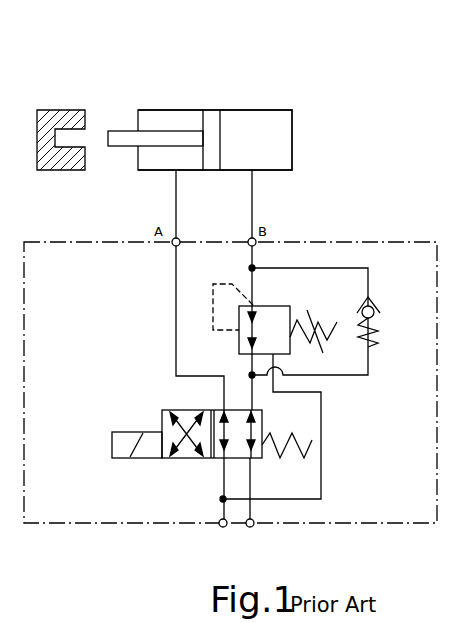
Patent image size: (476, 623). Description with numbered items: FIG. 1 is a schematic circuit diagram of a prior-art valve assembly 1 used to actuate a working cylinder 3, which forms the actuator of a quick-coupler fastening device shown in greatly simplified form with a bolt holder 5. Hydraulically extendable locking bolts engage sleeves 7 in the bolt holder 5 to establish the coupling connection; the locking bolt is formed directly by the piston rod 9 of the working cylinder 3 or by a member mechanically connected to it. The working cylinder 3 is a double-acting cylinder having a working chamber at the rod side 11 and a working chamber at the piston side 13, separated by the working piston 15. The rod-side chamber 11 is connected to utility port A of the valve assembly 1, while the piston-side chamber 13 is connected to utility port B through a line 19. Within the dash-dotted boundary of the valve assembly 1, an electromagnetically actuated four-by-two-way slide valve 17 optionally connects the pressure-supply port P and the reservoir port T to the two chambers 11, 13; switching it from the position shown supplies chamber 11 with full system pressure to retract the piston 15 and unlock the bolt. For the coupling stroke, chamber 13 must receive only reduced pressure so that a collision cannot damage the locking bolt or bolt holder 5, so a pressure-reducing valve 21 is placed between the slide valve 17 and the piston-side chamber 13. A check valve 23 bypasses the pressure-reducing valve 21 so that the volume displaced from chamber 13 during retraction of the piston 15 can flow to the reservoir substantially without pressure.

The valve assembly 1 is at (383, 241).
The working cylinder 3 is at (253, 124).
The bolt holder 5 is at (62, 110).
The sleeves 7 is at (90, 136).
The piston rod 9 is at (168, 135).
The working chamber at the rod side 11 is at (157, 155).
The working chamber at the piston side 13 is at (267, 122).
The working piston 15 is at (213, 118).
The 4/2-way slide valve 17 is at (178, 407).
The hydraulic line 19 is at (253, 195).
The pressure-reducing valve 21 is at (239, 340).
The check valve 23 is at (372, 298).